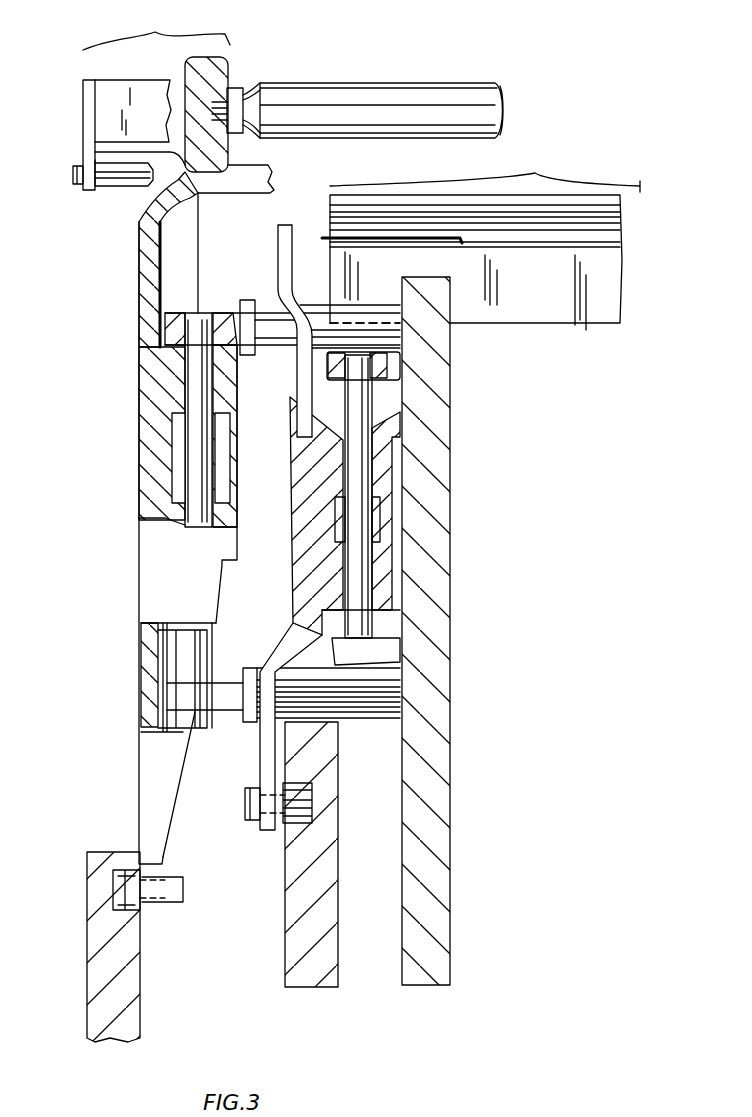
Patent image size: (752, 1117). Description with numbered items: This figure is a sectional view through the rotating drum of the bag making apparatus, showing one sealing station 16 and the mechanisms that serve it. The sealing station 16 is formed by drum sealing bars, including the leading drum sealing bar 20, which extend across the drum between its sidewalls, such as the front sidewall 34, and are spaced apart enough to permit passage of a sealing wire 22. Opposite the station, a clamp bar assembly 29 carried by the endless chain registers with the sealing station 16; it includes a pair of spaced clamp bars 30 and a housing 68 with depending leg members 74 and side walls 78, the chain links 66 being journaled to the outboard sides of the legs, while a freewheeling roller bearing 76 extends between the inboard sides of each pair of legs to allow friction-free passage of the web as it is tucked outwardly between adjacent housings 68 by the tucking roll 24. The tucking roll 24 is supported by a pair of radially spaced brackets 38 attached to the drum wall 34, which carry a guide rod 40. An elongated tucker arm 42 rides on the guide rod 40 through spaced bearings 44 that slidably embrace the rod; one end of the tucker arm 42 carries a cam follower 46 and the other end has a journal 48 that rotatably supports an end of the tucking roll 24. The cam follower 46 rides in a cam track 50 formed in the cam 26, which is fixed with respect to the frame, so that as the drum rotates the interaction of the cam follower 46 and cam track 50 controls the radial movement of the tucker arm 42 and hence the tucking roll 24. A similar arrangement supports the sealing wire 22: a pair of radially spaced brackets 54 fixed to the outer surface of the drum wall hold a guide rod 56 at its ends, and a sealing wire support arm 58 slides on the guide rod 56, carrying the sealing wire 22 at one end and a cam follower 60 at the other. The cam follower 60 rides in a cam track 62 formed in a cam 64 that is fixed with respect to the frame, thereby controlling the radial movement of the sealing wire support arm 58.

The sealing station 16 is at (485, 167).
The drum sealing bar 20 is at (612, 262).
The sealing wire 22 is at (298, 222).
The tucking roll 24 is at (345, 85).
The cam 26 is at (95, 967).
The clamp bar assembly 29 is at (156, 25).
The clamp bar 30 is at (137, 205).
The front sidewall 34 is at (440, 565).
The bracket 38 is at (270, 305).
The guide rod 40 is at (195, 650).
The tucker arm 42 is at (148, 570).
The bearing 44 is at (178, 401).
The cam follower 46 is at (140, 905).
The journal 48 is at (236, 88).
The cam track 50 is at (112, 870).
The bracket 54 is at (395, 368).
The guide rod 56 is at (372, 425).
The sealing wire support arm 58 is at (298, 570).
The cam follower 60 is at (305, 815).
The cam track 62 is at (318, 800).
The cam 64 is at (340, 968).
The chain link 66 is at (75, 183).
The housing 68 is at (97, 80).
The depending leg member 74 is at (90, 135).
The freewheeling roller bearing 76 is at (112, 192).
The side wall 78 is at (83, 110).